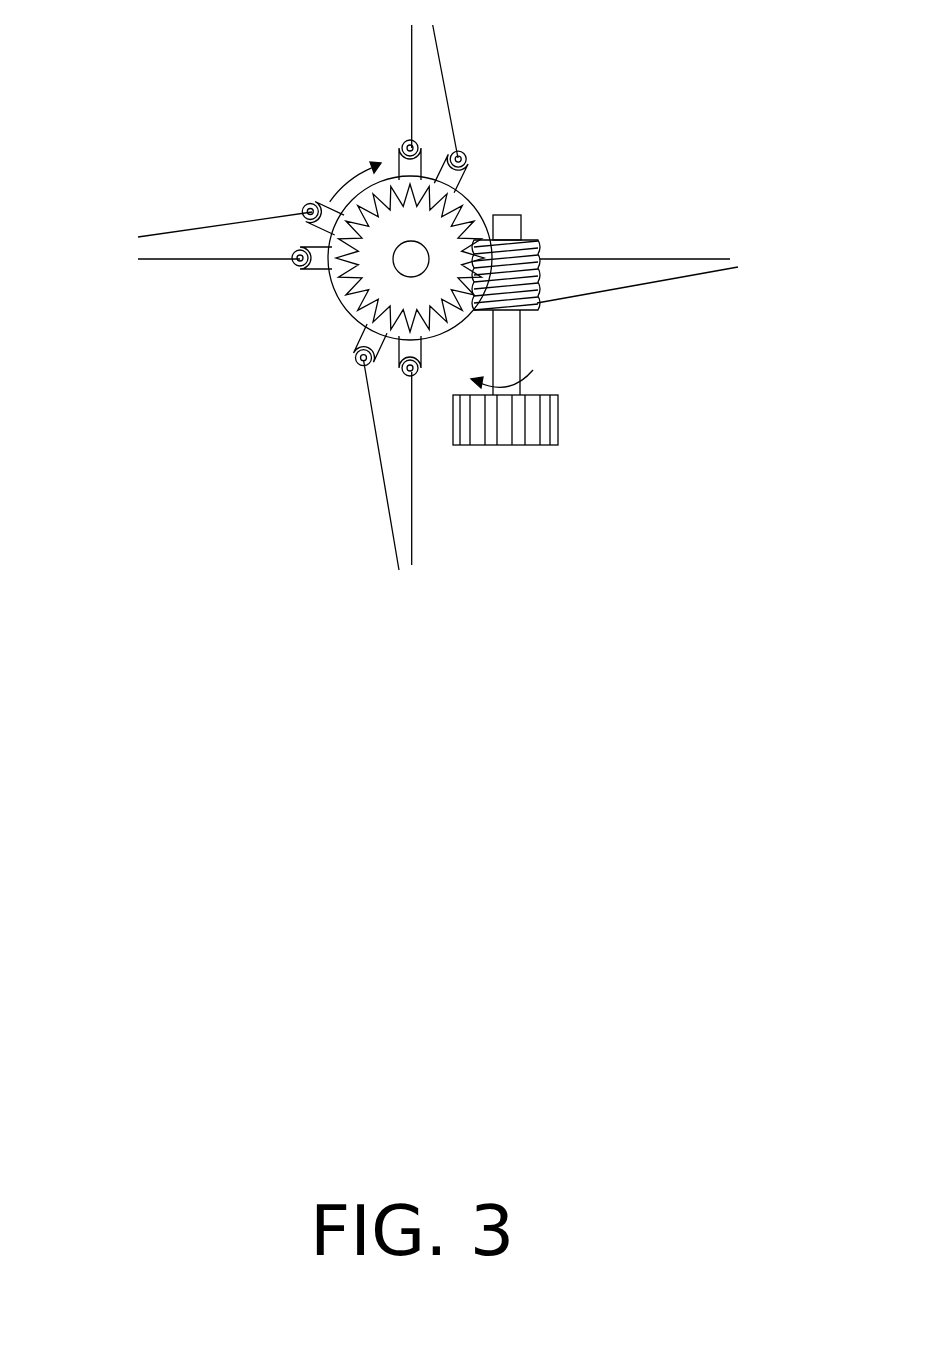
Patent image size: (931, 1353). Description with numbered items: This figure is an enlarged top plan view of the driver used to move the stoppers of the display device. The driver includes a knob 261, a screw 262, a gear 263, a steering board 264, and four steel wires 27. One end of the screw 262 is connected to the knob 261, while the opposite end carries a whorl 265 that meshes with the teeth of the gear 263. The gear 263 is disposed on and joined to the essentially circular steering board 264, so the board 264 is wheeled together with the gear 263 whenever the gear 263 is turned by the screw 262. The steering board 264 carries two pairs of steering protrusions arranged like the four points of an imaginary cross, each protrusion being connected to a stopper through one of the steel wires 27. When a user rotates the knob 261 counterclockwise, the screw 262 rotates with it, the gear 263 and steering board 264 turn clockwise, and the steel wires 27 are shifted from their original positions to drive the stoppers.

The steel wires 27 is at (654, 257).
The knob 261 is at (535, 421).
The screw 262 is at (505, 332).
The gear 263 is at (462, 212).
The steering board 264 is at (405, 160).
The whorl 265 is at (538, 232).